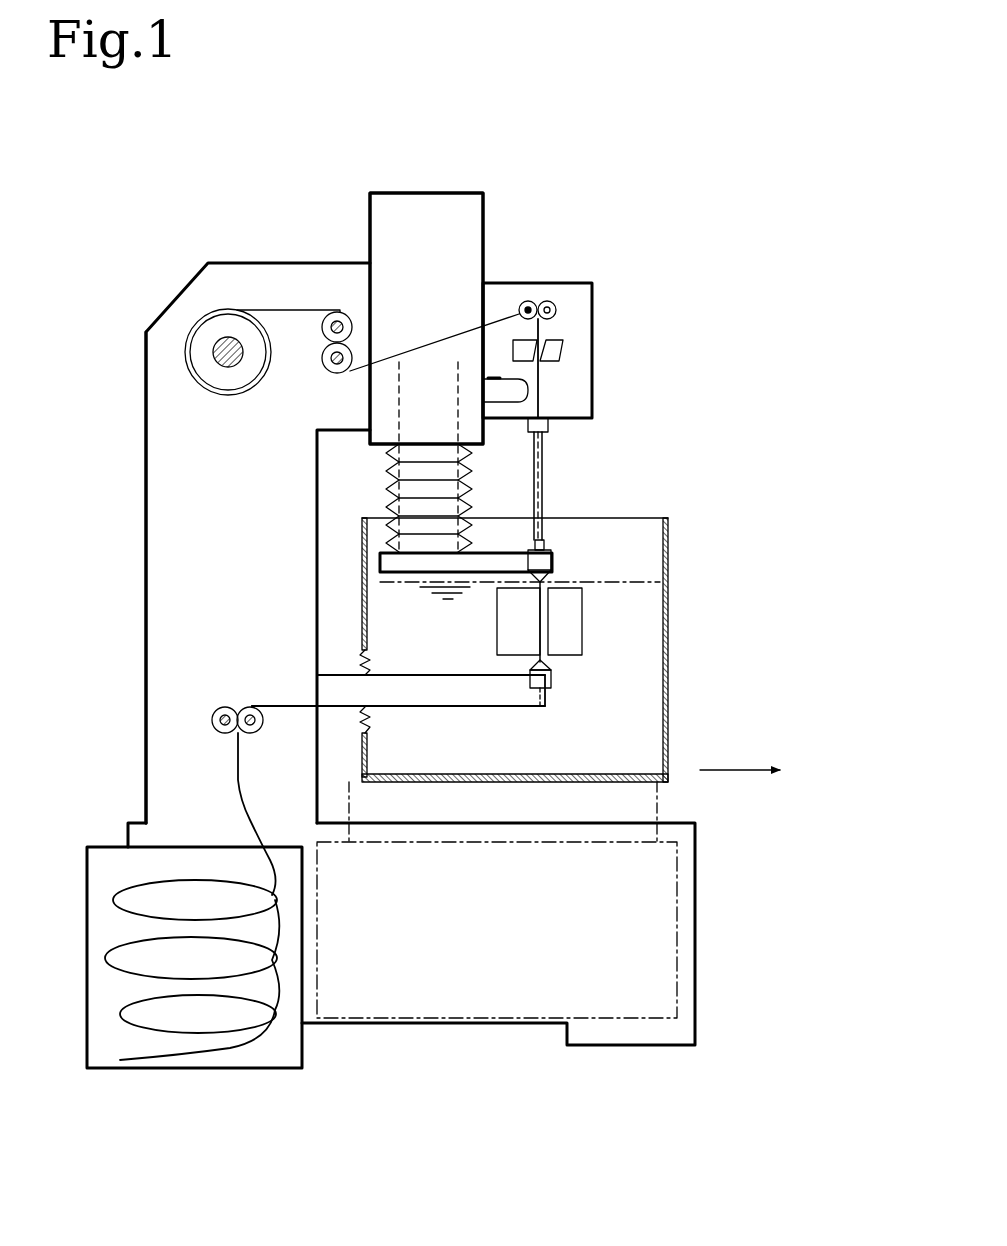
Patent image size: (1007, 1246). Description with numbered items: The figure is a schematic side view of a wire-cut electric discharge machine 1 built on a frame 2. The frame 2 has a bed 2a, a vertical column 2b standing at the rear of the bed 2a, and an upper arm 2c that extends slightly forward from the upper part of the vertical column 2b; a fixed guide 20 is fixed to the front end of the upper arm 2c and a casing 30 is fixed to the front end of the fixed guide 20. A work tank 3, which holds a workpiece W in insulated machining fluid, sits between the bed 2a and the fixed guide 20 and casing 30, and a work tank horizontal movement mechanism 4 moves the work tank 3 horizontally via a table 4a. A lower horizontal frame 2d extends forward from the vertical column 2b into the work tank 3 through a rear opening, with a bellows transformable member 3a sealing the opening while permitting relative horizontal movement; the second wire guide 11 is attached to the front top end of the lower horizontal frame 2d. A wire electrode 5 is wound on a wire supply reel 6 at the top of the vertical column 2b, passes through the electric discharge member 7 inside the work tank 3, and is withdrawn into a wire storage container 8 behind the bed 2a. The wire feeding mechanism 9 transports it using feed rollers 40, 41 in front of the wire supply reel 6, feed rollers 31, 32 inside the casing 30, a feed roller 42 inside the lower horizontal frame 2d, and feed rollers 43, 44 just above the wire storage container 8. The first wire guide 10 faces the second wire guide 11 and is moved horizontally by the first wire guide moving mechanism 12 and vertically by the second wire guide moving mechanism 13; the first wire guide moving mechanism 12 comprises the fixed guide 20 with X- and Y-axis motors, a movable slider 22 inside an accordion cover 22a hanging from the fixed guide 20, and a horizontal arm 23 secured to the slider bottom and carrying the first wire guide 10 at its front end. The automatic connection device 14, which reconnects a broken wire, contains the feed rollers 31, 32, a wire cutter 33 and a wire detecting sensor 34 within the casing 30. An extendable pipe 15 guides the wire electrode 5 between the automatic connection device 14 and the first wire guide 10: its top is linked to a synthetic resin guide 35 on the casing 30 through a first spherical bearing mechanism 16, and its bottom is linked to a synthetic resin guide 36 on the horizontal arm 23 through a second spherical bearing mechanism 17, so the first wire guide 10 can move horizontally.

The wire-cut electric discharge machine 1 is at (702, 236).
The frame 2 is at (143, 470).
The bed 2a is at (456, 1022).
The vertical column 2b is at (146, 578).
The upper arm 2c is at (345, 430).
The lower horizontal frame 2d is at (397, 676).
The work tank 3 is at (668, 572).
The bellows transformable member 3a is at (362, 660).
The work tank horizontal movement mechanism 4 is at (677, 915).
The table 4a is at (657, 795).
The wire electrode 5 is at (497, 648).
The wire supply reel 6 is at (205, 390).
The electric discharge member 7 is at (487, 672).
The wire storage container 8 is at (302, 942).
The wire feeding mechanism 9 is at (287, 406).
The first wire guide 10 is at (551, 568).
The second wire guide 11 is at (552, 676).
The first wire guide moving mechanism 12 is at (375, 192).
The second wire guide moving mechanism 13 is at (426, 318).
The automatic connection device 14 is at (595, 282).
The pipe 15 is at (552, 490).
The first spherical bearing mechanism 16 is at (560, 427).
The second spherical bearing mechanism 17 is at (560, 540).
The fixed guide 20 is at (485, 205).
The movable slider 22 is at (392, 500).
The accordion cover 22a is at (470, 478).
The horizontal arm 23 is at (392, 564).
The casing 30 is at (592, 402).
The feed roller 31 is at (528, 301).
The feed roller 32 is at (552, 303).
The wire cutter 33 is at (562, 342).
The wire detecting sensor 34 is at (520, 390).
The synthetic resin guide 35 is at (548, 432).
The synthetic resin guide 36 is at (535, 550).
The feed roller 40 is at (337, 311).
The feed roller 41 is at (322, 352).
The feed roller 42 is at (545, 690).
The feed roller 43 is at (220, 707).
The feed roller 44 is at (258, 710).
The workpiece W is at (582, 625).